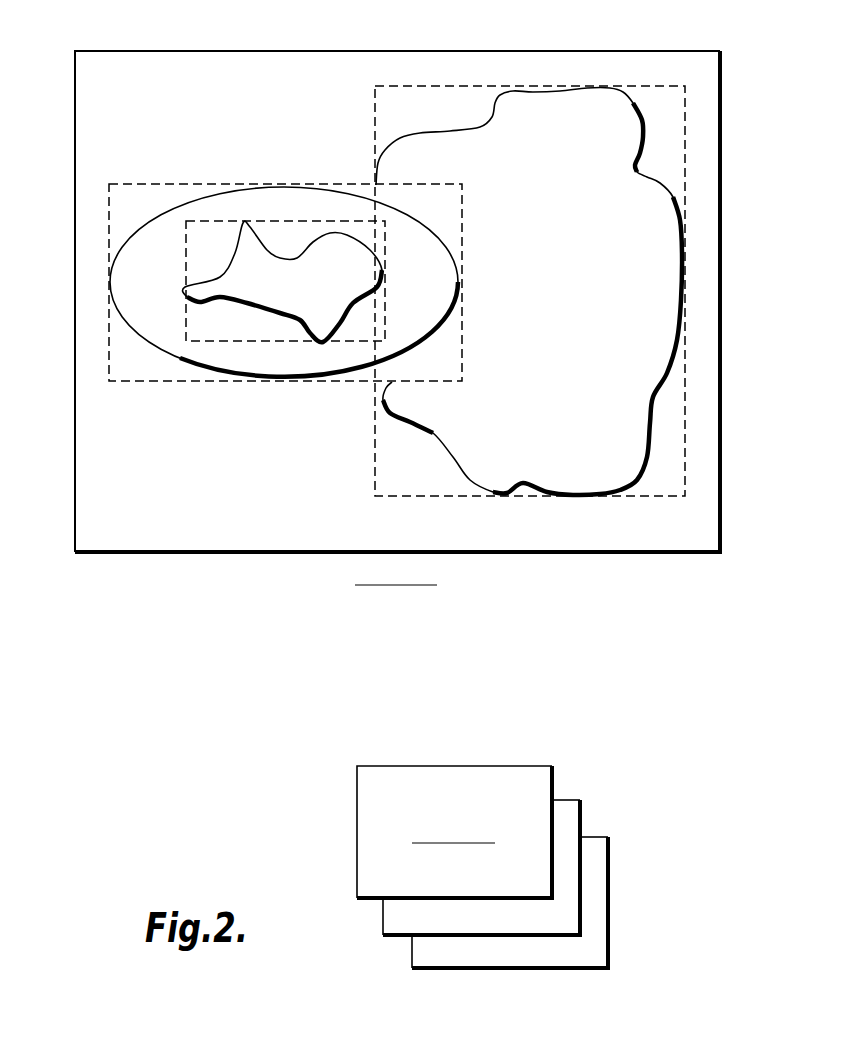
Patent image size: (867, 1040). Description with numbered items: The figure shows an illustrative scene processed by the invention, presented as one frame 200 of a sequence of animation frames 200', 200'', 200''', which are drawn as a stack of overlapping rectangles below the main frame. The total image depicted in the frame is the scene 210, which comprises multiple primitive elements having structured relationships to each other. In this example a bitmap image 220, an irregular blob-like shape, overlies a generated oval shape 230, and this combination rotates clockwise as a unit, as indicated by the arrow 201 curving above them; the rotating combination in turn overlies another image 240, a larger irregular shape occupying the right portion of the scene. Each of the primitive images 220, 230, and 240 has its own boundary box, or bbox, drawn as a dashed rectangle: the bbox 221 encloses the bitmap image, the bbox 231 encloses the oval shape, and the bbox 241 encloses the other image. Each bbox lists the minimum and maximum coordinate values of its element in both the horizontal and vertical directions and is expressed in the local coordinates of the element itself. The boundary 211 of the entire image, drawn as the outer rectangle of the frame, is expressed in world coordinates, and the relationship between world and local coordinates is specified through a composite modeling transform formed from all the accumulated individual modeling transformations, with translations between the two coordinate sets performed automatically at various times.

The frame 200 is at (321, 682).
The frame of the sequence 200' is at (397, 832).
The frame of the sequence 200'' is at (545, 867).
The frame of the sequence 200''' is at (580, 902).
The arrow 201 is at (347, 158).
The scene 210 is at (130, 535).
The boundary 211 is at (651, 553).
The bitmap image 220 is at (307, 283).
The boundary box 221 is at (185, 238).
The generated oval shape 230 is at (157, 281).
The boundary box 231 is at (147, 381).
The image 240 is at (546, 291).
The boundary box 241 is at (686, 466).